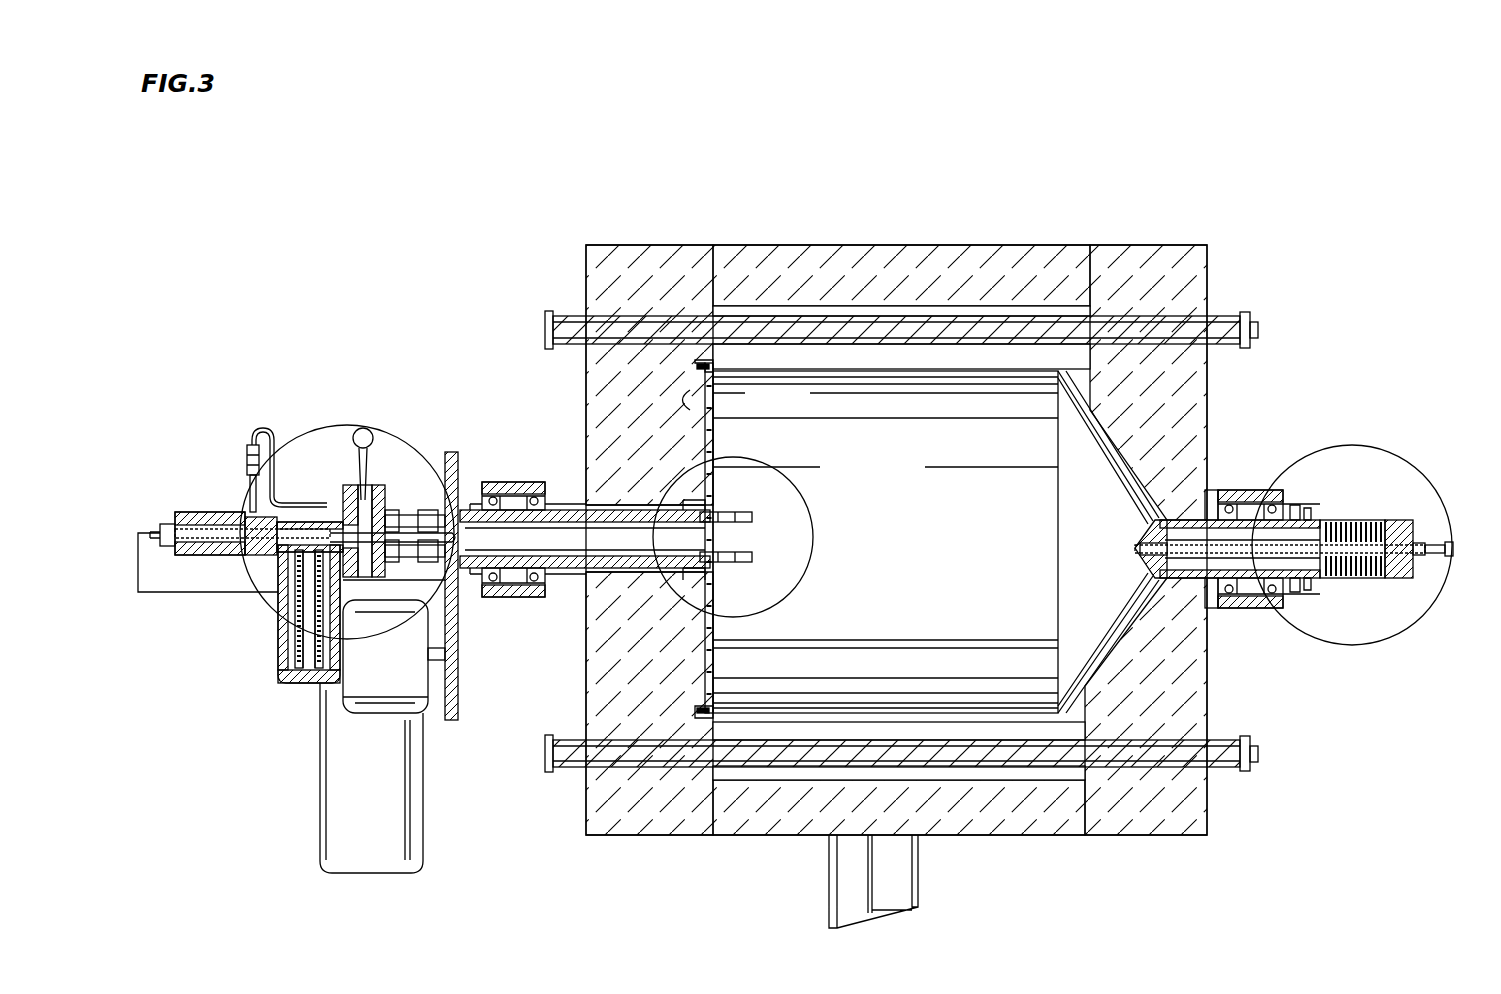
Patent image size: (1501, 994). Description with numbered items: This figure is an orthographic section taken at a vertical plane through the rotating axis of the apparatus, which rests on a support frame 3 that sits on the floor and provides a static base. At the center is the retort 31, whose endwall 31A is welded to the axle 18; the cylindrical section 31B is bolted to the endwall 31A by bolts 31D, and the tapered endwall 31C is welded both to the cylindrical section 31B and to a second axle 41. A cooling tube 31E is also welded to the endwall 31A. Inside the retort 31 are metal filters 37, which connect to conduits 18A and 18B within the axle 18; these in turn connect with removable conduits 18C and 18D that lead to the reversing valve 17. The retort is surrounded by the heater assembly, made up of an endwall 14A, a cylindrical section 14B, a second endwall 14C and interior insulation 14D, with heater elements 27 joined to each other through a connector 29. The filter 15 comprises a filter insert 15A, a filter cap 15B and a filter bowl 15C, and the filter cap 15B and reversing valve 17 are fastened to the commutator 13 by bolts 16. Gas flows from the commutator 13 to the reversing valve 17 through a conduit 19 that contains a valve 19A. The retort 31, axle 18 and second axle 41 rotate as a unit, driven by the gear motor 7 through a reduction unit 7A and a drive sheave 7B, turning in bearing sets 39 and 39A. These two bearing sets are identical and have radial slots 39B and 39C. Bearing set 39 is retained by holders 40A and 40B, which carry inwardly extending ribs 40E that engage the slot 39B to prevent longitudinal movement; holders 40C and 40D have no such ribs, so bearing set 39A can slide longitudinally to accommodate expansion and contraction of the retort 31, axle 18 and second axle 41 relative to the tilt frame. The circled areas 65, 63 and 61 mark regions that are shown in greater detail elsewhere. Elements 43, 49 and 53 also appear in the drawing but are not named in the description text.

The support frame 3 is at (920, 880).
The gear motor 7 is at (318, 868).
The reduction unit 7A is at (352, 705).
The drive sheave 7B is at (452, 722).
The commutator 13 is at (195, 512).
The endwall 14A is at (630, 840).
The cylindrical section 14B is at (1085, 300).
The second endwall 14C is at (1207, 820).
The interior insulation 14D is at (955, 263).
The filter 15 is at (275, 682).
The filter insert 15A is at (298, 640).
The filter cap 15B is at (318, 522).
The filter bowl 15C is at (310, 680).
The bolts 16 is at (268, 580).
The reversing valve 17 is at (378, 483).
The axle 18 is at (712, 437).
The conduit 18A is at (660, 572).
The conduit 18B is at (600, 570).
The removable conduit 18C is at (415, 510).
The removable conduit 18D is at (405, 585).
The conduit 19 is at (250, 440).
The valve 19A is at (246, 465).
The heater elements 27 is at (1092, 312).
The connector 29 is at (1245, 335).
The retort 31 is at (835, 724).
The endwall 31A is at (716, 640).
The cylindrical section 31B is at (865, 375).
The tapered endwall 31C is at (1112, 468).
The bolts 31D is at (713, 360).
The cooling tube 31E is at (885, 393).
The metal filters 37 is at (756, 512).
The bearing set 39 is at (575, 490).
The bearing set 39A is at (1255, 505).
The radial slot 39B is at (518, 598).
The radial slot 39C is at (1300, 610).
The holder 40A is at (530, 487).
The holder 40B is at (510, 600).
The holder 40C is at (1300, 498).
The holder 40D is at (540, 600).
The ribs 40E is at (498, 486).
The second axle 41 is at (1200, 630).
The nozzle 43 is at (1140, 560).
The spring 49 is at (1395, 580).
The rod end 53 is at (1450, 560).
The circled area 61 is at (1412, 456).
The circled area 63 is at (815, 500).
The circled area 65 is at (345, 425).